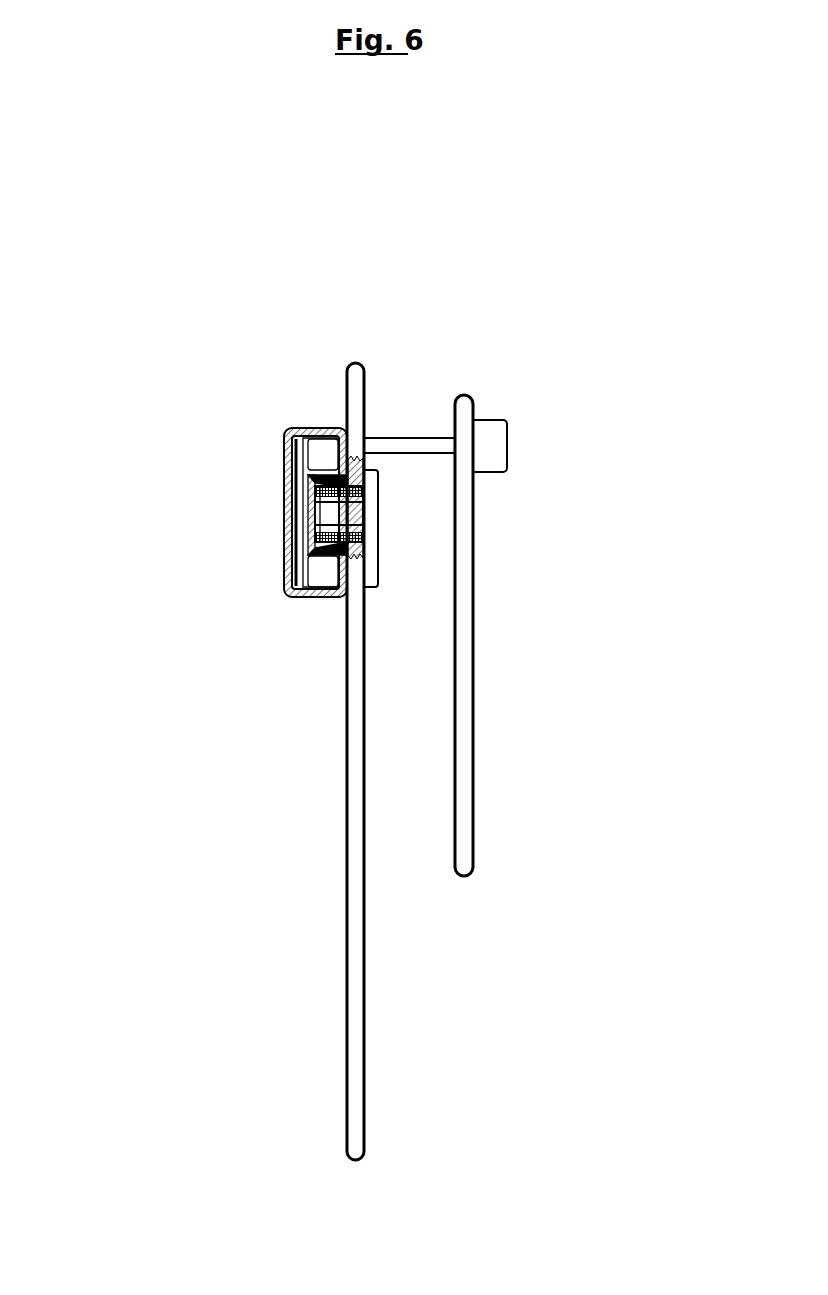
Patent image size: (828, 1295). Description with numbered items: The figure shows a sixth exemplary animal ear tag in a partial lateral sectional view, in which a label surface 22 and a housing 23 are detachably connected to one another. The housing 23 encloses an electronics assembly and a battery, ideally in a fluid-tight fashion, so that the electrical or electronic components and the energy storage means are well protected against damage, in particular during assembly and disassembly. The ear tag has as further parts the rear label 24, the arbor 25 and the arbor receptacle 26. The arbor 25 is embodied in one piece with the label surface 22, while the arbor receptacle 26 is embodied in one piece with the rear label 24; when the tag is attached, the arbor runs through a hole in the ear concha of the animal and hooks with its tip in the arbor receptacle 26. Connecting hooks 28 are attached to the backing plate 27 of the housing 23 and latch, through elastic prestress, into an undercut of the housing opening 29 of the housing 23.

The label surface 22 is at (353, 760).
The housing 23 is at (283, 443).
The rear label 24 is at (463, 540).
The arbor 25 is at (410, 443).
The arbor receptacle 26 is at (507, 447).
The backing plate 27 is at (380, 557).
The connecting hooks 28 is at (312, 483).
The housing opening 29 is at (315, 548).